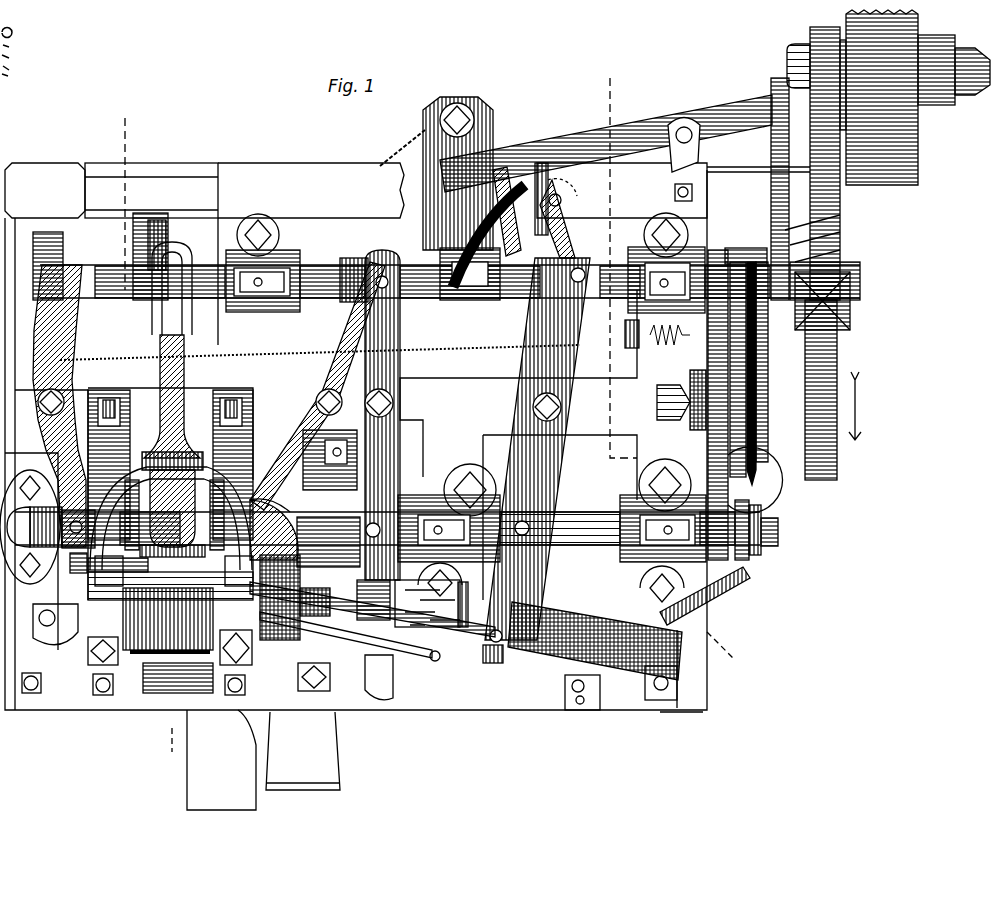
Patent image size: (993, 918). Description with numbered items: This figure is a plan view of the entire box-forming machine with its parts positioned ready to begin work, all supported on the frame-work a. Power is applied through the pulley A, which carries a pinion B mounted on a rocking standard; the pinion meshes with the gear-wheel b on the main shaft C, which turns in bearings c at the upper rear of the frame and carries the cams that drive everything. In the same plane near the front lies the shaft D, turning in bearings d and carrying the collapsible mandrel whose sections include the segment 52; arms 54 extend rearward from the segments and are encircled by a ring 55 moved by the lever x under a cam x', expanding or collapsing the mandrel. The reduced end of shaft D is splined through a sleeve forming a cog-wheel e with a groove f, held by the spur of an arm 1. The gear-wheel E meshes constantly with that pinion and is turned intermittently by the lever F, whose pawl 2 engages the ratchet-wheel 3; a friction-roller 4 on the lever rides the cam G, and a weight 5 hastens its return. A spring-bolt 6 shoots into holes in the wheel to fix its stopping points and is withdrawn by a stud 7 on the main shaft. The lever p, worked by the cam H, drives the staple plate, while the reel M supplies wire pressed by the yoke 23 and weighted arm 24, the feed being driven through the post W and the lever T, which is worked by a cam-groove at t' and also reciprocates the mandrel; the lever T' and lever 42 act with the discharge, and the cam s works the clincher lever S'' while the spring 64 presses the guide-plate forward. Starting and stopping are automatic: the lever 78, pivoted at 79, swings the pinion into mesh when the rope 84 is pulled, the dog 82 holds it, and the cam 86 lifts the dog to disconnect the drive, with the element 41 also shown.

The frame-work a is at (367, 444).
The cam s is at (450, 260).
The cam x' is at (361, 259).
The cam w is at (73, 262).
The cam H is at (166, 256).
The bearings c is at (292, 268).
The mandrel section 52 is at (458, 173).
The cam 86 is at (470, 274).
The main shaft C is at (462, 263).
The dog 82 is at (520, 209).
The rope 84 is at (402, 143).
The lever 78 is at (640, 135).
The pivot 79 is at (688, 130).
The cam t' is at (578, 219).
The friction-roller 4 is at (805, 264).
The pinion B is at (808, 30).
The pulley A is at (922, 128).
The cam G is at (818, 318).
The gear-wheel b is at (832, 404).
The gear-wheel E is at (748, 388).
The pawl 2 is at (740, 353).
The lever F is at (741, 262).
The ratchet-wheel 3 is at (742, 430).
The spring-bolt 6 is at (682, 345).
The stud 7 is at (614, 330).
The weight 5 is at (770, 488).
The groove f is at (745, 532).
The cog-wheel e is at (727, 560).
The arm 1 is at (724, 596).
The lever x is at (392, 435).
The lever T is at (537, 450).
The lever end T' is at (496, 663).
The cord 41 is at (320, 360).
The lever 42 is at (530, 365).
The connecting rod S'' is at (317, 386).
The shaft D is at (588, 515).
The bearings d is at (448, 522).
The lever p is at (186, 426).
The arm 54 is at (305, 482).
The ring 55 is at (402, 584).
The weighted arm 24 is at (312, 596).
The yoke 23 is at (350, 646).
The lever W is at (393, 682).
The spring 64 is at (50, 638).
The reel M is at (595, 629).